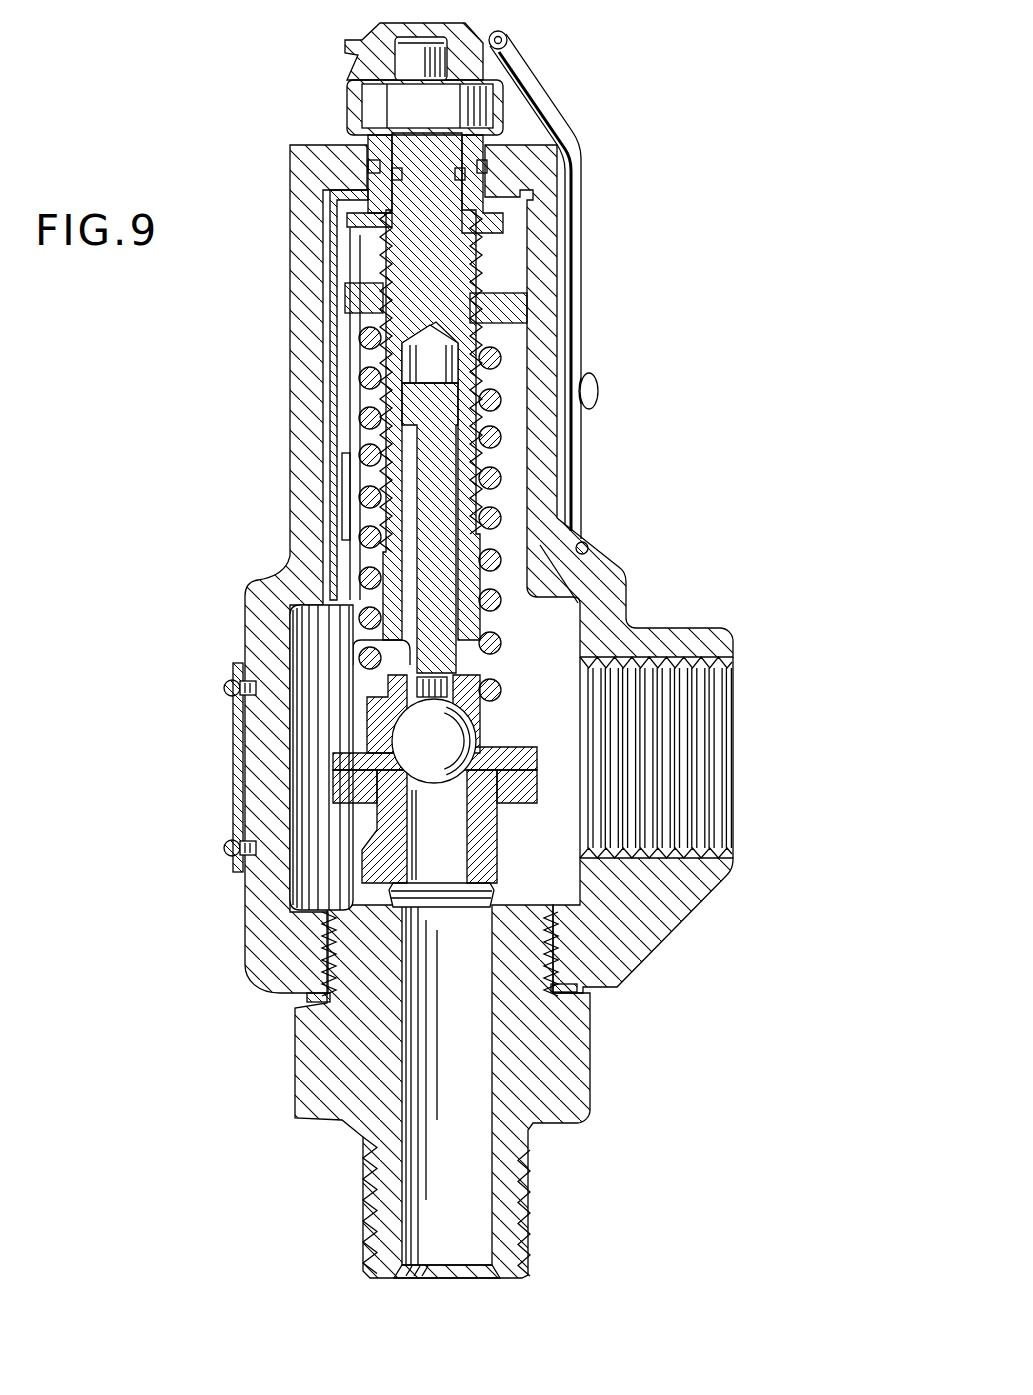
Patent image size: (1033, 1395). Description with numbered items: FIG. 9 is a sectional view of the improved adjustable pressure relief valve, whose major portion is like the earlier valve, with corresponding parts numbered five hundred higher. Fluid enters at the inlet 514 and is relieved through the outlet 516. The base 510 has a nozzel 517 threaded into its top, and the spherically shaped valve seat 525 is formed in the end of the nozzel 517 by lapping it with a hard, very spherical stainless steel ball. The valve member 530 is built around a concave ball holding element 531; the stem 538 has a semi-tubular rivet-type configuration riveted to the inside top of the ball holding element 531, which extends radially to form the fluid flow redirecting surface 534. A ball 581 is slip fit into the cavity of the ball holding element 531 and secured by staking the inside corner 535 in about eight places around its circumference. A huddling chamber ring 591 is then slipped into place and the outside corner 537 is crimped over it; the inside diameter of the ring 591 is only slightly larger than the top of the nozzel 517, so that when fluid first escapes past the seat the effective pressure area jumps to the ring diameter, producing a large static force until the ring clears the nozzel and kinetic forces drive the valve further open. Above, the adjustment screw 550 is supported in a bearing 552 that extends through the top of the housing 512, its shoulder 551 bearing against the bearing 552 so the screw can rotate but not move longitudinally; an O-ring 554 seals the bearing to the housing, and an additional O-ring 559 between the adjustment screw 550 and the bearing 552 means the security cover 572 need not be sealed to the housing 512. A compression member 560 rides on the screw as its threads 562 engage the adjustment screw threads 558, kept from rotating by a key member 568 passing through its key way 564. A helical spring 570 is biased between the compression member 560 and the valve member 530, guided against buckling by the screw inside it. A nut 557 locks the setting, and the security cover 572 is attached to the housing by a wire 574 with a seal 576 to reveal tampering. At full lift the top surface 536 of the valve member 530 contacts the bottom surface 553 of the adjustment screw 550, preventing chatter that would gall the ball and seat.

The base 510 is at (595, 1052).
The housing 512 is at (248, 598).
The inlet 514 is at (447, 1280).
The outlet 516 is at (735, 760).
The nozzel 517 is at (375, 818).
The valve seat 525 is at (441, 616).
The valve member 530 is at (350, 742).
The ball holding element 531 is at (523, 766).
The fluid flow redirecting surface 534 is at (372, 792).
The inside corner 535 is at (495, 740).
The top surface 536 is at (238, 670).
The outside corner 537 is at (503, 800).
The stem 538 is at (430, 633).
The adjustment screw 550 is at (492, 638).
The shoulder 551 is at (333, 218).
The bearing 552 is at (540, 256).
The bottom surface 553 is at (378, 658).
The O-ring 554 is at (370, 166).
The nut 557 is at (480, 102).
The adjustment screw threads 558 is at (474, 268).
The O-ring 559 is at (486, 164).
The compression member 560 is at (497, 318).
The threads 562 is at (382, 318).
The key way 564 is at (390, 293).
The key member 568 is at (336, 500).
The spring 570 is at (482, 690).
The security cover 572 is at (352, 112).
The wire 574 is at (582, 340).
The seal 576 is at (594, 392).
The ball 581 is at (460, 756).
The huddling chamber ring 591 is at (365, 760).